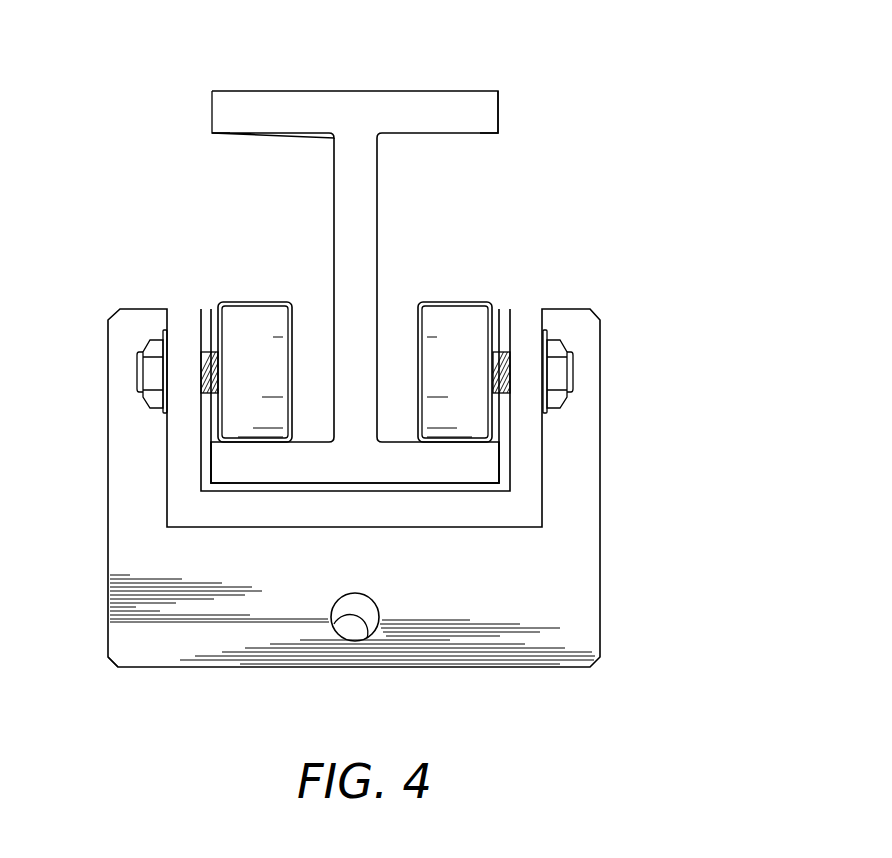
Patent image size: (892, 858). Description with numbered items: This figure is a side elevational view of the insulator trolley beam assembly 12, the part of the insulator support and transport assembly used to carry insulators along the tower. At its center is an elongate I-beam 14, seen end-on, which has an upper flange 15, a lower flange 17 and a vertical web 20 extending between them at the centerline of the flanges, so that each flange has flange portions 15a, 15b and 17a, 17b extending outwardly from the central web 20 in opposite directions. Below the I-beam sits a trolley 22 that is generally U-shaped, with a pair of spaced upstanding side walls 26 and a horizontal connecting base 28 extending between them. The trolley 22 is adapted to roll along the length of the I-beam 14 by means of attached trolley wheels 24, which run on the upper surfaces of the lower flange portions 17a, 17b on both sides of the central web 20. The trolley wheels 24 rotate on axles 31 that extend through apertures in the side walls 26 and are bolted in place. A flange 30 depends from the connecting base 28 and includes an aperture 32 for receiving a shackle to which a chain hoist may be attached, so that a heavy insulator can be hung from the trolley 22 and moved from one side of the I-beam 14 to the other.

The insulator trolley beam assembly 12 is at (384, 371).
The I-beam 14 is at (348, 291).
The upper flange 15 is at (360, 88).
The flange portion 15a is at (238, 110).
The flange portion 15b is at (477, 107).
The lower flange 17 is at (365, 473).
The lower flange portion 17a is at (240, 470).
The lower flange portion 17b is at (477, 468).
The vertical web 20 is at (355, 197).
The trolley 22 is at (312, 519).
The trolley wheels 24 is at (247, 313).
The side walls 26 is at (182, 448).
The connecting base 28 is at (330, 519).
The flange 30 is at (143, 643).
The axles 31 is at (210, 352).
The aperture 32 is at (350, 624).